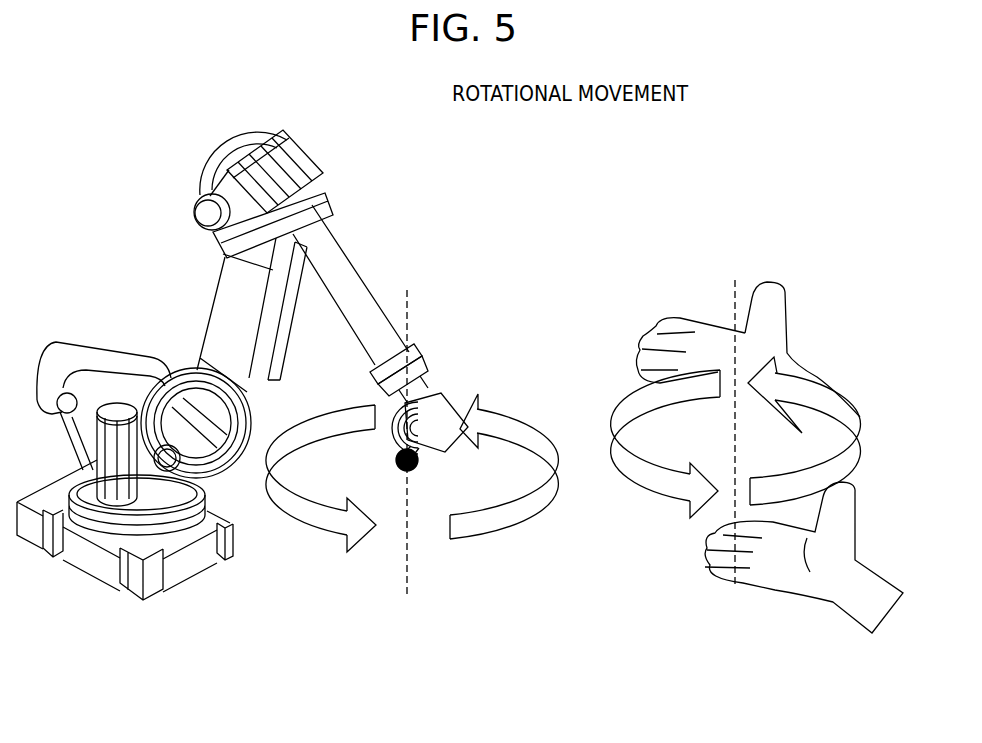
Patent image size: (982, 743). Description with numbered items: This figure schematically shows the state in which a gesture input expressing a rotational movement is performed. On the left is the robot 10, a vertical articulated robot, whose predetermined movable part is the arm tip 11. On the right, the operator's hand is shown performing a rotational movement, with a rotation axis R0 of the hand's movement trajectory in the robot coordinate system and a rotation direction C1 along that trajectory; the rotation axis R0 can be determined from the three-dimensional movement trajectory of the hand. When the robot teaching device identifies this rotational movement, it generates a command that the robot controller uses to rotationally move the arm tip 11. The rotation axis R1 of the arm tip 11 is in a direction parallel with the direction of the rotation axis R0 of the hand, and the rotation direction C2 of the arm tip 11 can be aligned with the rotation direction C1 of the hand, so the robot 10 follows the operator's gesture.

The robot 10 is at (252, 365).
The arm tip 11 is at (424, 457).
The rotation axis R1 is at (407, 308).
The rotation axis R0 is at (735, 296).
The rotation direction C1 is at (860, 418).
The rotation direction C2 is at (481, 541).